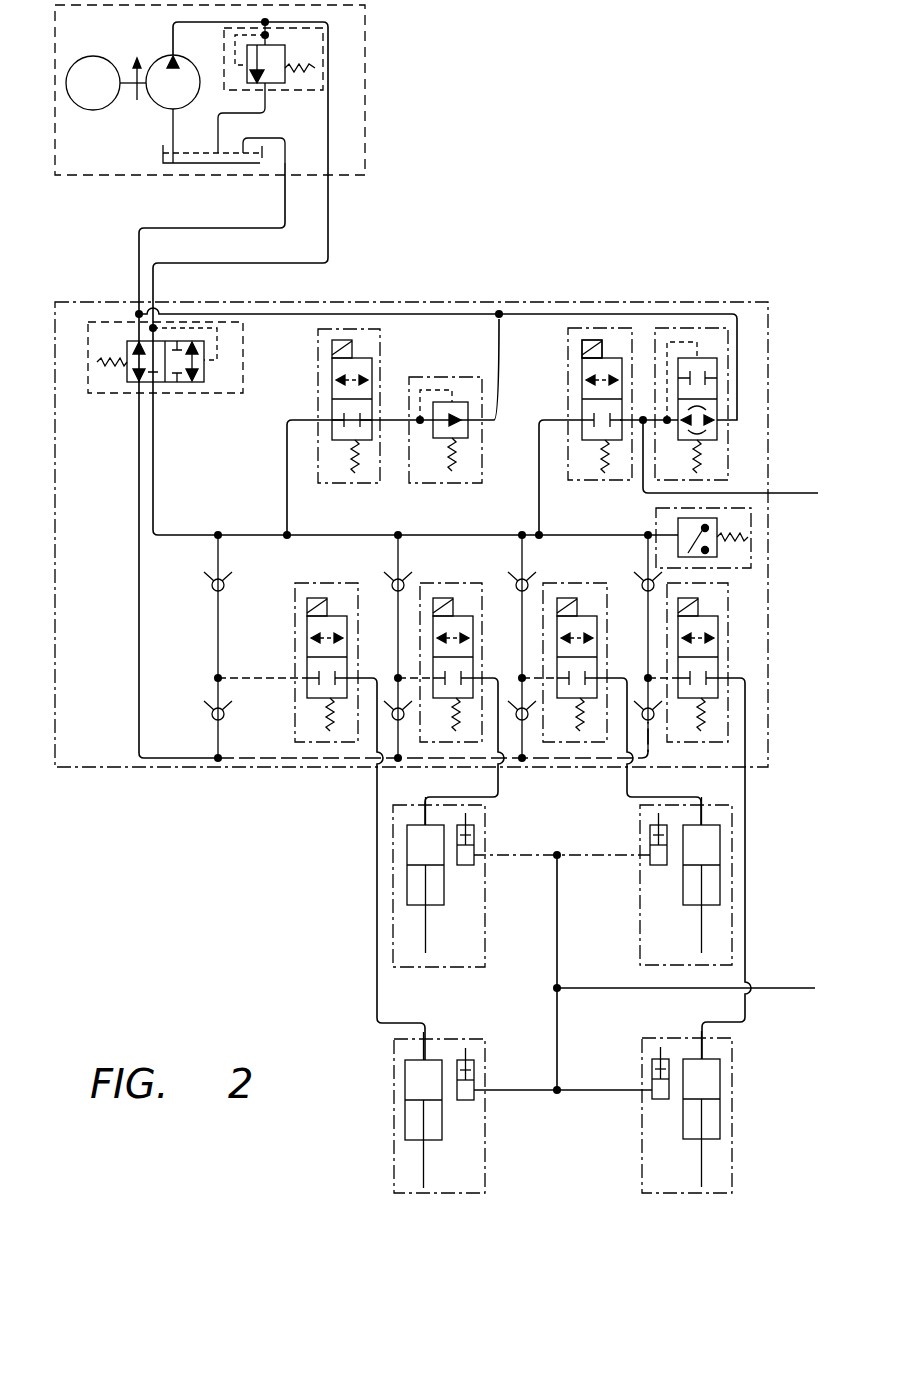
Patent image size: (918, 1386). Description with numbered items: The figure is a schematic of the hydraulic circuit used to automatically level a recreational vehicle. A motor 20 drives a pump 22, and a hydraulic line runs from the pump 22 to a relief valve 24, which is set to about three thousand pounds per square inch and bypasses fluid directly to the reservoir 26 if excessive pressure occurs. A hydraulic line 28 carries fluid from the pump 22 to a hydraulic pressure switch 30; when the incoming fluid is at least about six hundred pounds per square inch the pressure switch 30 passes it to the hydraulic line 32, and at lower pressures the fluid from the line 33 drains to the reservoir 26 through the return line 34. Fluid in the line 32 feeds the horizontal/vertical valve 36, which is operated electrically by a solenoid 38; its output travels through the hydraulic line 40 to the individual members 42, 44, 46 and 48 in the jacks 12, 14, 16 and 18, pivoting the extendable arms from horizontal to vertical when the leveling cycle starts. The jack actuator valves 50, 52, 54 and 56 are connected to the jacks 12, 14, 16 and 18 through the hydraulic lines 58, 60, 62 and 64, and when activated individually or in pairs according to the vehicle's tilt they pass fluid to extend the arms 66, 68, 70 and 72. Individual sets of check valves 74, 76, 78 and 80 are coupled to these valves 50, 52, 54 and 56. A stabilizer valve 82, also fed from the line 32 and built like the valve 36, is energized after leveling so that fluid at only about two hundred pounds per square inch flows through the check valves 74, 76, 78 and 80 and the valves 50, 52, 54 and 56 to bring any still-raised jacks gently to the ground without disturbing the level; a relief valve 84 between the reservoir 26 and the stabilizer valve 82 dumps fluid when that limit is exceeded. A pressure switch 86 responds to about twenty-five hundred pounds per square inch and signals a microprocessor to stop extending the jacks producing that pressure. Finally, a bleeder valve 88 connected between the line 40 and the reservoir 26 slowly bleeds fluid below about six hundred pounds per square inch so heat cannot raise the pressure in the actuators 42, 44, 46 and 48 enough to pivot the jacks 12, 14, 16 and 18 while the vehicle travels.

The jack 12 is at (433, 893).
The jack 14 is at (684, 881).
The jack 16 is at (681, 1112).
The jack 18 is at (437, 1122).
The motor 20 is at (95, 128).
The pump 22 is at (163, 68).
The relief valve 24 is at (312, 58).
The reservoir 26 is at (283, 152).
The hydraulic line 28 is at (332, 240).
The hydraulic pressure switch 30 is at (180, 382).
The hydraulic line 32 is at (153, 493).
The line 33 is at (130, 545).
The return line 34 is at (137, 250).
The horizontal/vertical valve 36 is at (568, 370).
The solenoid 38 is at (592, 345).
The hydraulic line 40 is at (640, 493).
The jack actuator member 42 is at (477, 842).
The jack actuator member 44 is at (648, 838).
The jack actuator member 46 is at (648, 1078).
The jack actuator member 48 is at (475, 1072).
The jack actuator valve 50 is at (427, 583).
The jack actuator valve 52 is at (550, 583).
The jack actuator valve 54 is at (728, 606).
The jack actuator valve 56 is at (302, 583).
The hydraulic line 58 is at (500, 782).
The hydraulic line 60 is at (625, 780).
The hydraulic line 62 is at (748, 843).
The hydraulic line 64 is at (365, 848).
The arm 66 is at (425, 940).
The arm 68 is at (700, 922).
The arm 70 is at (700, 1150).
The arm 72 is at (425, 1175).
The check valve set 74 is at (393, 708).
The check valve set 76 is at (517, 708).
The check valve set 78 is at (642, 708).
The check valve set 80 is at (210, 710).
The stabilizer valve 82 is at (318, 358).
The relief valve 84 is at (482, 440).
The pressure switch 86 is at (750, 527).
The bleeder valve 88 is at (730, 370).